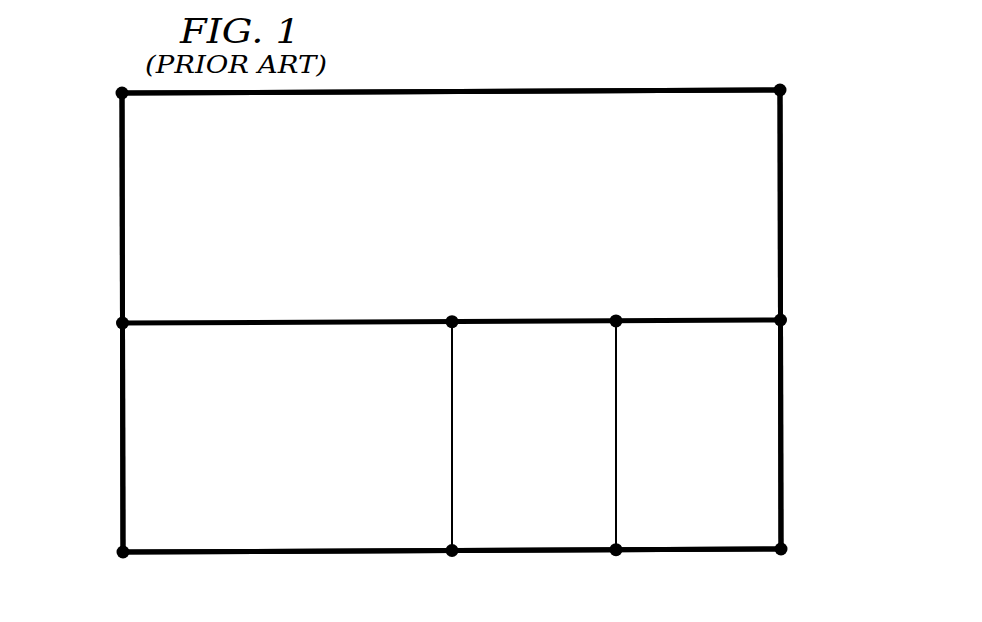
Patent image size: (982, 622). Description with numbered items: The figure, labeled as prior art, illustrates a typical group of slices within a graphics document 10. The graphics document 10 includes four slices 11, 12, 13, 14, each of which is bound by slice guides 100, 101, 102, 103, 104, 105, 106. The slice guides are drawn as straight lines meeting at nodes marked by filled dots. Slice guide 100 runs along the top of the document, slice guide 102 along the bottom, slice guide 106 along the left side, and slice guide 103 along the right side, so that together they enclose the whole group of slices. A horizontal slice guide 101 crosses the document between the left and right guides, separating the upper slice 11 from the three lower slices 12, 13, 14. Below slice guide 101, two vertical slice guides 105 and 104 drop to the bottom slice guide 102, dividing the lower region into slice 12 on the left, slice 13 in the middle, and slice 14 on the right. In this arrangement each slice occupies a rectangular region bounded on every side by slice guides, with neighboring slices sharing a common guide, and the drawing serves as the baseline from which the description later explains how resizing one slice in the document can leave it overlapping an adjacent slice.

The graphics document 10 is at (449, 280).
The slice 11 is at (465, 225).
The slice 12 is at (302, 431).
The slice 13 is at (547, 429).
The slice 14 is at (712, 429).
The slice guide 100 is at (697, 88).
The slice guide 101 is at (685, 318).
The slice guide 102 is at (698, 547).
The slice guide 103 is at (783, 412).
The slice guide 104 is at (615, 493).
The slice guide 105 is at (450, 493).
The slice guide 106 is at (122, 417).